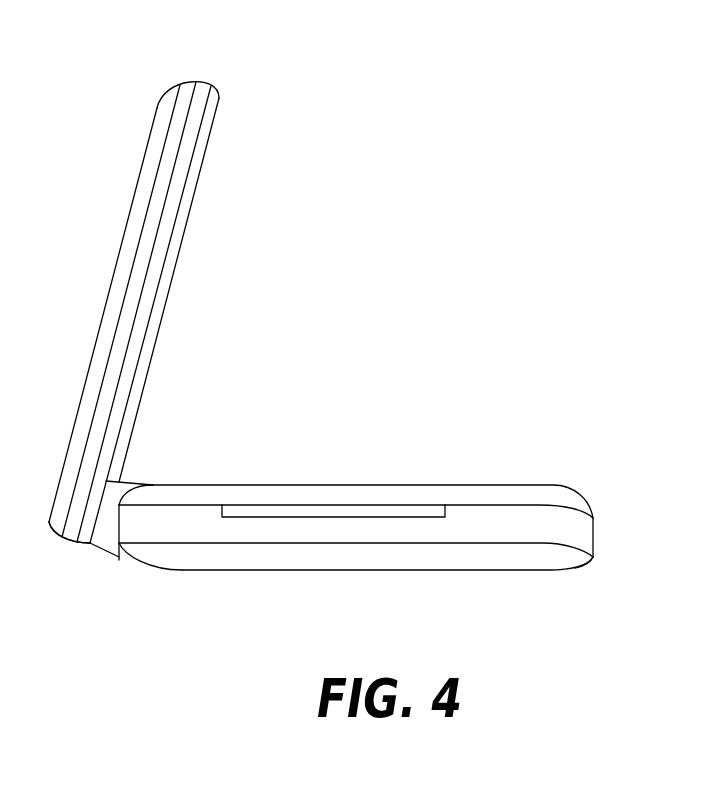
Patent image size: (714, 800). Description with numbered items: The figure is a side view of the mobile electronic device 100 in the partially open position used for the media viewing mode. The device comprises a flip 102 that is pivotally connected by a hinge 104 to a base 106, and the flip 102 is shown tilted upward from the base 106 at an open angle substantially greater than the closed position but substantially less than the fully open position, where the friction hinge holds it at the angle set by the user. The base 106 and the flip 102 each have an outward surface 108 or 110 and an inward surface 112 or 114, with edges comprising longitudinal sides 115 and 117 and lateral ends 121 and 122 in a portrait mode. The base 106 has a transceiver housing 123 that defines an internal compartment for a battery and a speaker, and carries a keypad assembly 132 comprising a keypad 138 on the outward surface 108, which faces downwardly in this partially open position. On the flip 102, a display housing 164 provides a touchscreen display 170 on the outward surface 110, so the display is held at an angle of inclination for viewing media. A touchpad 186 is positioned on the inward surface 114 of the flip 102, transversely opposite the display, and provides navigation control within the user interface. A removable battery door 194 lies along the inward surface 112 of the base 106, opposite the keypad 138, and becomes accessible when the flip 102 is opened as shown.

The mobile electronic device 100 is at (522, 276).
The flip 102 is at (185, 80).
The hinge 104 is at (90, 547).
The base 106 is at (597, 528).
The outward surface of the base 108 is at (520, 570).
The outward surface of the flip 110 is at (148, 143).
The inward surface of the base 112 is at (507, 483).
The inward surface of the flip 114 is at (203, 165).
The longitudinal side 115 is at (595, 557).
The longitudinal side 117 is at (62, 536).
The lateral end 121 is at (123, 292).
The lateral end 122 is at (186, 505).
The transceiver housing 123 is at (118, 552).
The keypad assembly 132 is at (205, 572).
The keypad 138 is at (277, 572).
The display housing 164 is at (160, 100).
The touchscreen display 170 is at (97, 337).
The touchpad 186 is at (175, 277).
The removable battery door 194 is at (316, 485).